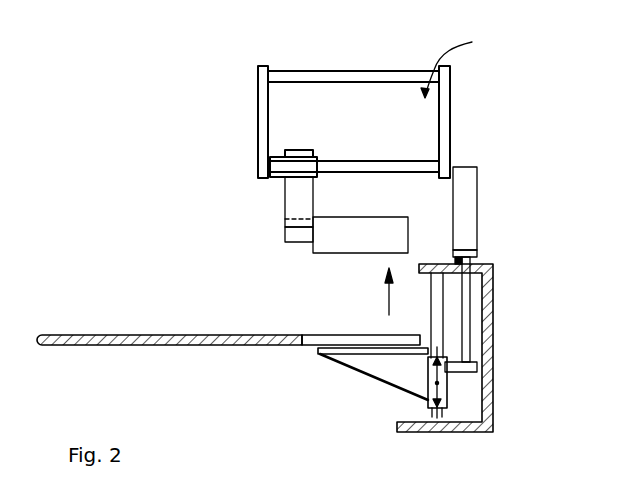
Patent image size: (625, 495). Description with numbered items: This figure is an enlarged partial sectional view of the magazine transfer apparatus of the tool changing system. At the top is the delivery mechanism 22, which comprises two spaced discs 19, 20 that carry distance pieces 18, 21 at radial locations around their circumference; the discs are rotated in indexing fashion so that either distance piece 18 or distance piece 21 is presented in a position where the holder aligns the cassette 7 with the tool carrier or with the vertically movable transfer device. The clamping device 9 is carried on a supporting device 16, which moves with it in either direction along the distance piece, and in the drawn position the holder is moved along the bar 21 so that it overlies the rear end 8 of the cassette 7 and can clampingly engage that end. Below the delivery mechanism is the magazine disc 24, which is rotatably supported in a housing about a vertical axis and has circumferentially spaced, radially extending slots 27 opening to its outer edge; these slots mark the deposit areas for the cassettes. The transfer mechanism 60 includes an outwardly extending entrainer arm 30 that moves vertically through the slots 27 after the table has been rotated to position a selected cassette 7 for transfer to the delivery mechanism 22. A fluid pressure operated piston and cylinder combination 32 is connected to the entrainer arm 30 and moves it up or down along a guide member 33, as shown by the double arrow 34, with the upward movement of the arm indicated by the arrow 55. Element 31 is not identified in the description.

The cassette 7 is at (358, 232).
The rear end 8 is at (295, 237).
The clamping device 9 is at (295, 200).
The supporting device 16 is at (292, 168).
The distance piece 18 is at (352, 73).
The disc 19 is at (450, 113).
The disc 20 is at (258, 116).
The distance piece 21 is at (358, 162).
The delivery mechanism 22 is at (454, 59).
The magazine disc 24 is at (181, 334).
The slots 27 is at (326, 343).
The entrainer arm 30 is at (352, 360).
The rod with foot 31 is at (468, 388).
The piston and cylinder combination 32 is at (467, 208).
The guide member 33 is at (433, 323).
The double arrow 34 is at (430, 377).
The arrow 55 is at (385, 305).
The transfer mechanism 60 is at (498, 346).